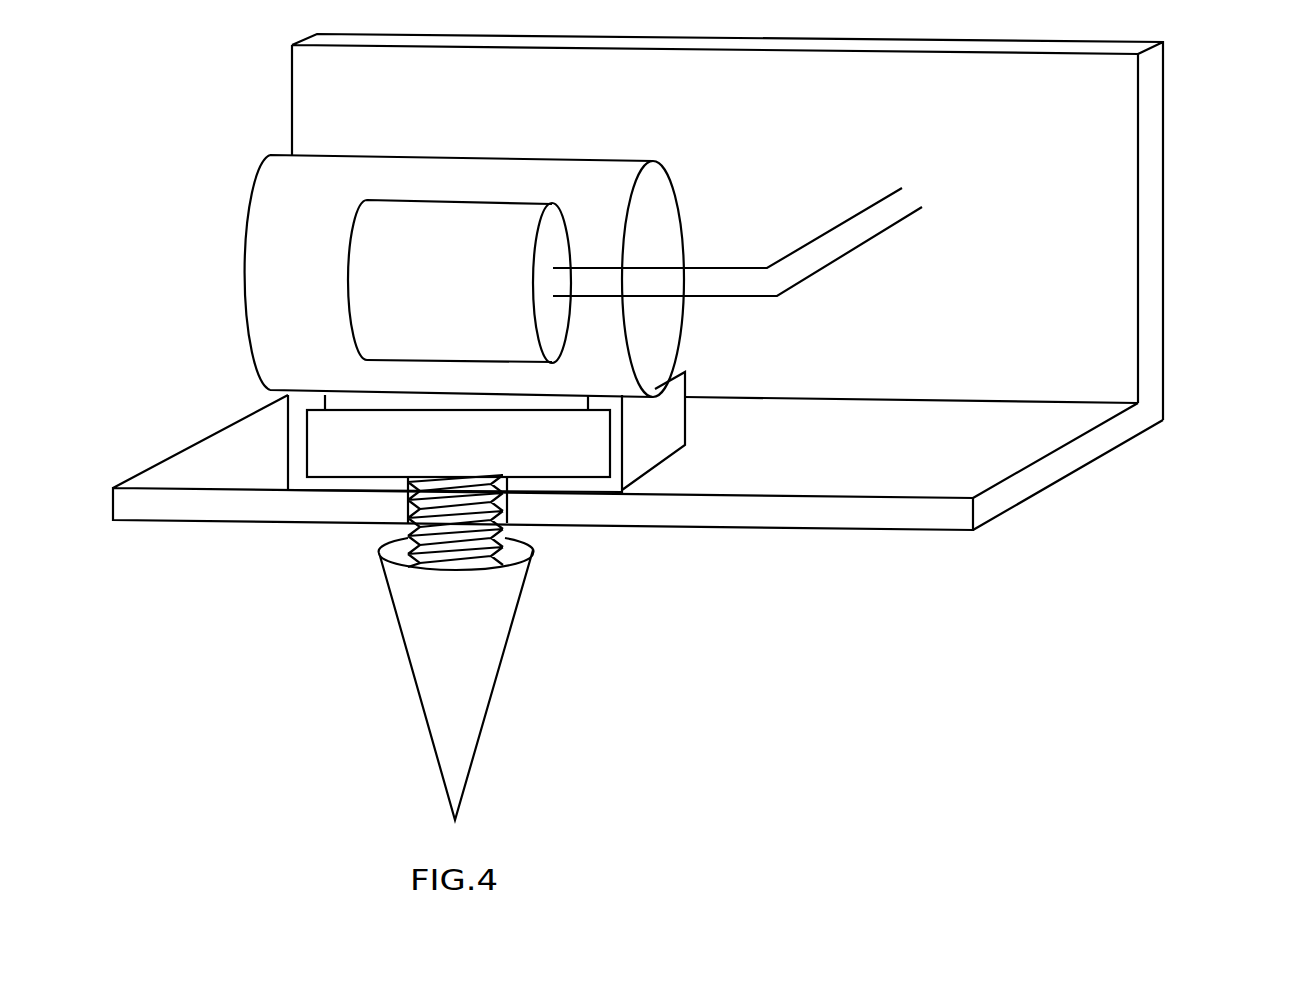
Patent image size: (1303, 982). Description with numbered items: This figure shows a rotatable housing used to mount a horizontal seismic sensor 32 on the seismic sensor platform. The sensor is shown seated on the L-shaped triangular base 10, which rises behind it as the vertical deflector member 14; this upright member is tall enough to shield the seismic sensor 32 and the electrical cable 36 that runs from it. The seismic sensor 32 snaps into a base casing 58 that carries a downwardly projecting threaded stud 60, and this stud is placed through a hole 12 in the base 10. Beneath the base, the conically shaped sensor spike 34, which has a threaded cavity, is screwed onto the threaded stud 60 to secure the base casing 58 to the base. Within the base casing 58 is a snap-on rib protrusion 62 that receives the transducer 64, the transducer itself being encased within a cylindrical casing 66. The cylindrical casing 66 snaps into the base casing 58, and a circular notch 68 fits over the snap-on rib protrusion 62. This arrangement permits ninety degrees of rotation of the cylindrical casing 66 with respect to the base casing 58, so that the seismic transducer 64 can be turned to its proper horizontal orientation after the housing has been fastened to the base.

The triangular base 10 is at (822, 497).
The aperture in base plate 12 is at (407, 513).
The vertical deflector member 14 is at (1165, 306).
The seismic sensor 32 is at (436, 271).
The sensor spike 34 is at (495, 690).
The electrical cable 36 is at (883, 232).
The base casing 58 is at (285, 457).
The threaded stud 60 is at (502, 523).
The snap-on rib protrusion 62 is at (607, 417).
The transducer 64 is at (506, 207).
The cylindrical casing 66 is at (680, 332).
The circular notch 68 is at (383, 408).